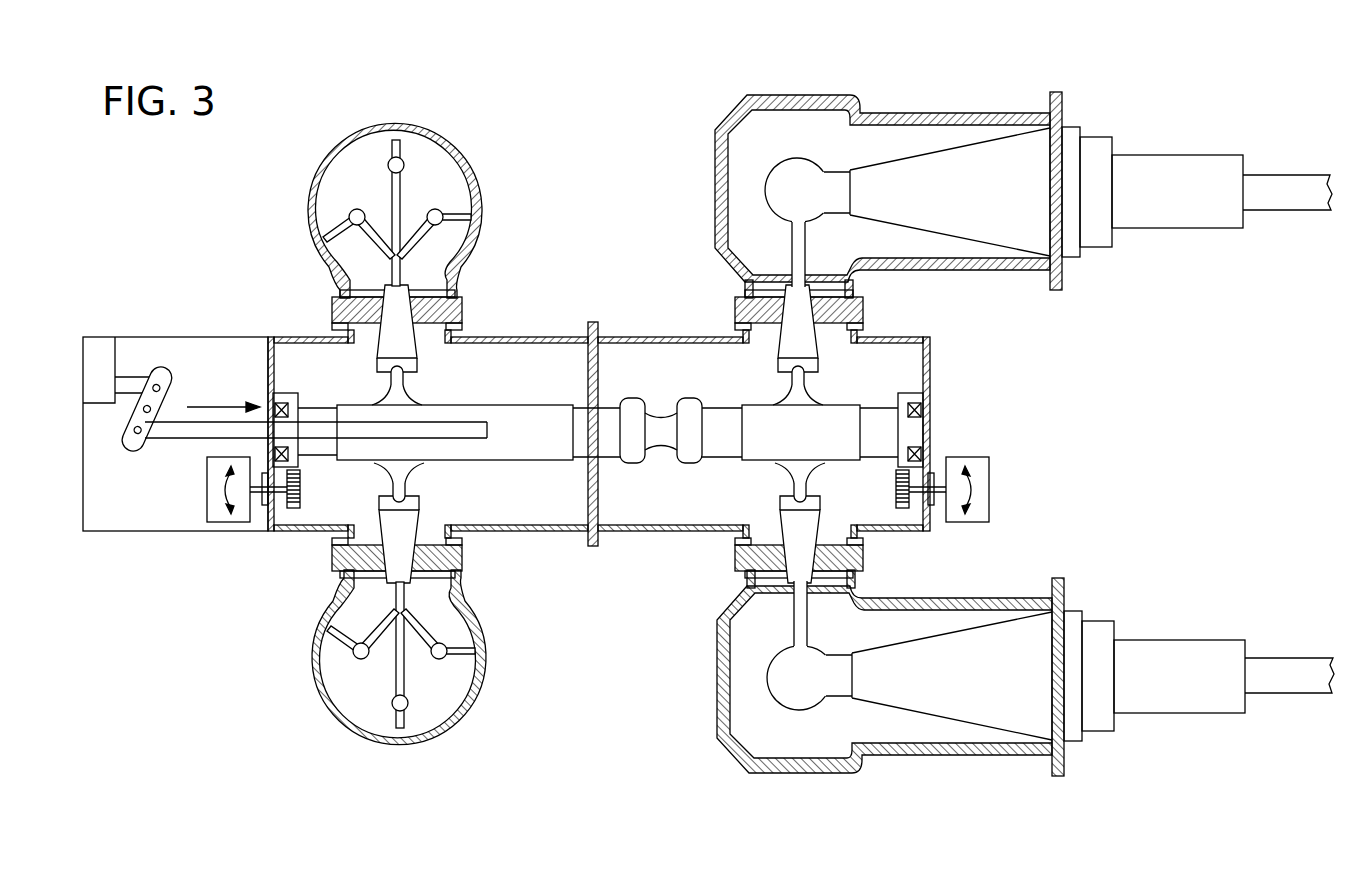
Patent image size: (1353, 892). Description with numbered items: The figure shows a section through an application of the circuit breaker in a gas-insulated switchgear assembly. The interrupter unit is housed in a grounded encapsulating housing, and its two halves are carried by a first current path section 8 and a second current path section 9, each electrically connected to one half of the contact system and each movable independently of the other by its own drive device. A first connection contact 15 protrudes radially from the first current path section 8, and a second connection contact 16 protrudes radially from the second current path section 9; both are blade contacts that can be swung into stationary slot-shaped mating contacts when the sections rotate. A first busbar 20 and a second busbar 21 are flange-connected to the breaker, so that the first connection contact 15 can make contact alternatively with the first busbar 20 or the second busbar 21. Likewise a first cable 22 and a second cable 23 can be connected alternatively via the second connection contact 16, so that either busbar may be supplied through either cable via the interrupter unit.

The first current path section 8 is at (509, 448).
The second current path section 9 is at (761, 448).
The first connection contact 15 is at (398, 388).
The second connection contact 16 is at (800, 388).
The first busbar 20 is at (472, 186).
The second busbar 21 is at (483, 690).
The first cable 22 is at (1291, 200).
The second cable 23 is at (1296, 665).